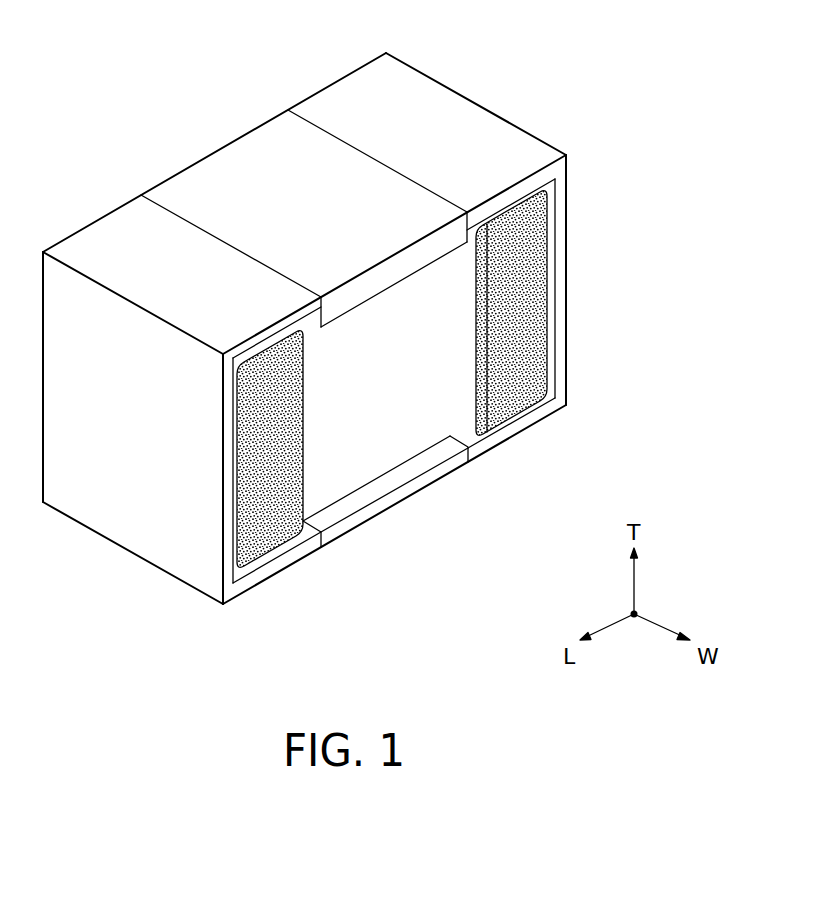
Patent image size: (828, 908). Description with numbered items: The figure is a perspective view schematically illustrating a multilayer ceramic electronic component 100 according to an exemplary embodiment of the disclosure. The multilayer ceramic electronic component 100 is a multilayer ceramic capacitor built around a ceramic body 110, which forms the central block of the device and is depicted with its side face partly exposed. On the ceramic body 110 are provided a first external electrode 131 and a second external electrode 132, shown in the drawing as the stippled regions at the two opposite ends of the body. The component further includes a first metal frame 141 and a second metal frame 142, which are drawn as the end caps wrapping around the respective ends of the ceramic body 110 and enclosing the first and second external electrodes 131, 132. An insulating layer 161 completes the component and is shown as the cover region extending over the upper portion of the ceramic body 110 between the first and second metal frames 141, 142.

The multilayer ceramic electronic component 100 is at (126, 41).
The ceramic body 110 is at (362, 467).
The first external electrode 131 is at (272, 528).
The second external electrode 132 is at (510, 384).
The first metal frame 141 is at (101, 529).
The second metal frame 142 is at (569, 310).
The insulating layer 161 is at (237, 187).